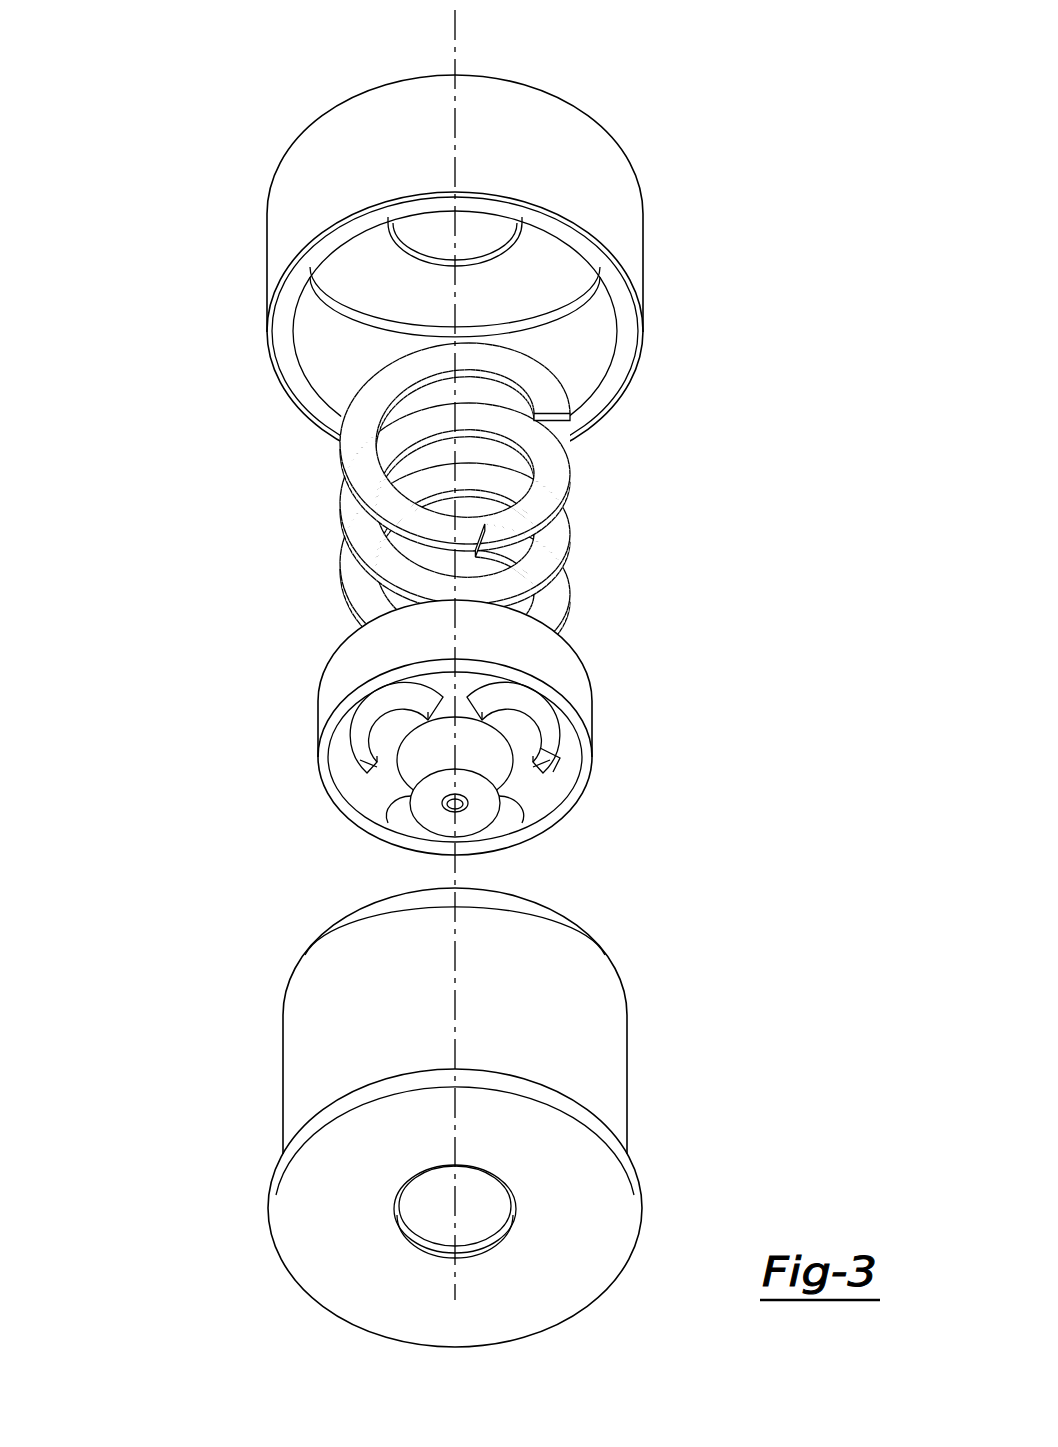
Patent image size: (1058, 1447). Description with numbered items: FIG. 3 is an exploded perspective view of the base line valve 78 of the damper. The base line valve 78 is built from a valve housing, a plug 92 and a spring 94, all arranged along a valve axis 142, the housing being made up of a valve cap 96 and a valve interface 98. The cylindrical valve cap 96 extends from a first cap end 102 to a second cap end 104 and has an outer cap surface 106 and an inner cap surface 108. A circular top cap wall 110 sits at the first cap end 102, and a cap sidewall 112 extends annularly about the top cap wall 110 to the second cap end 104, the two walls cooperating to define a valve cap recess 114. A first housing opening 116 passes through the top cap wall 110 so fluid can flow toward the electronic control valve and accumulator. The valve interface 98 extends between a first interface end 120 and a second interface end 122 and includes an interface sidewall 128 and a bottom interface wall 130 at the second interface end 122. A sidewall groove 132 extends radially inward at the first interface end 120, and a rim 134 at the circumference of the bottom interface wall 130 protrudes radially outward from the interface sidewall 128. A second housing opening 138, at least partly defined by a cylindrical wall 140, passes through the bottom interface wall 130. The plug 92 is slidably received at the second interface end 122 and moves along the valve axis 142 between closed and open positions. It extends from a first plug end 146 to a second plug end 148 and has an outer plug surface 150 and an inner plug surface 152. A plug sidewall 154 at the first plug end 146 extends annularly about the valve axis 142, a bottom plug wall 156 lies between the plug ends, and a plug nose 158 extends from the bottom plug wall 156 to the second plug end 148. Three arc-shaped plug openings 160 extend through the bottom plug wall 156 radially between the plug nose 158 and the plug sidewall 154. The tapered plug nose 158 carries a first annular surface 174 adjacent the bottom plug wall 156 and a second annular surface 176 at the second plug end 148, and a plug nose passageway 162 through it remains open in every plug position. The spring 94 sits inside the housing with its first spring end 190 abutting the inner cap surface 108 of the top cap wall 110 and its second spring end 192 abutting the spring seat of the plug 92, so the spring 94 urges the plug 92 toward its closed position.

The base line valve 78 is at (160, 108).
The valve cap 96 is at (469, 259).
The first cap end 102 is at (357, 93).
The outer cap surface 106 is at (278, 200).
The cap sidewall 112 is at (572, 132).
The second cap end 104 is at (283, 338).
The valve cap recess 114 is at (590, 333).
The top cap wall 110 is at (535, 265).
The inner cap surface 108 is at (330, 372).
The first housing opening 116 is at (418, 227).
The first spring end 190 is at (555, 385).
The spring 94 is at (514, 507).
The second spring end 192 is at (518, 562).
The plug 92 is at (469, 727).
The plug sidewall 154 is at (368, 632).
The first plug end 146 is at (327, 657).
The outer plug surface 150 is at (570, 676).
The plug openings 160 is at (545, 716).
The inner plug surface 152 is at (553, 756).
The plug nose 158 is at (417, 773).
The first annular surface 174 is at (520, 745).
The second annular surface 176 is at (513, 770).
The second plug end 148 is at (440, 822).
The plug nose passageway 162 is at (462, 806).
The bottom plug wall 156 is at (372, 808).
The valve interface 98 is at (411, 1101).
The first interface end 120 is at (360, 920).
The sidewall groove 132 is at (305, 957).
The interface sidewall 128 is at (307, 1038).
The rim 134 is at (628, 1158).
The bottom interface wall 130 is at (305, 1175).
The second interface end 122 is at (329, 1289).
The second housing opening 138 is at (479, 1223).
The cylindrical wall 140 is at (435, 1245).
The valve axis 142 is at (480, 40).